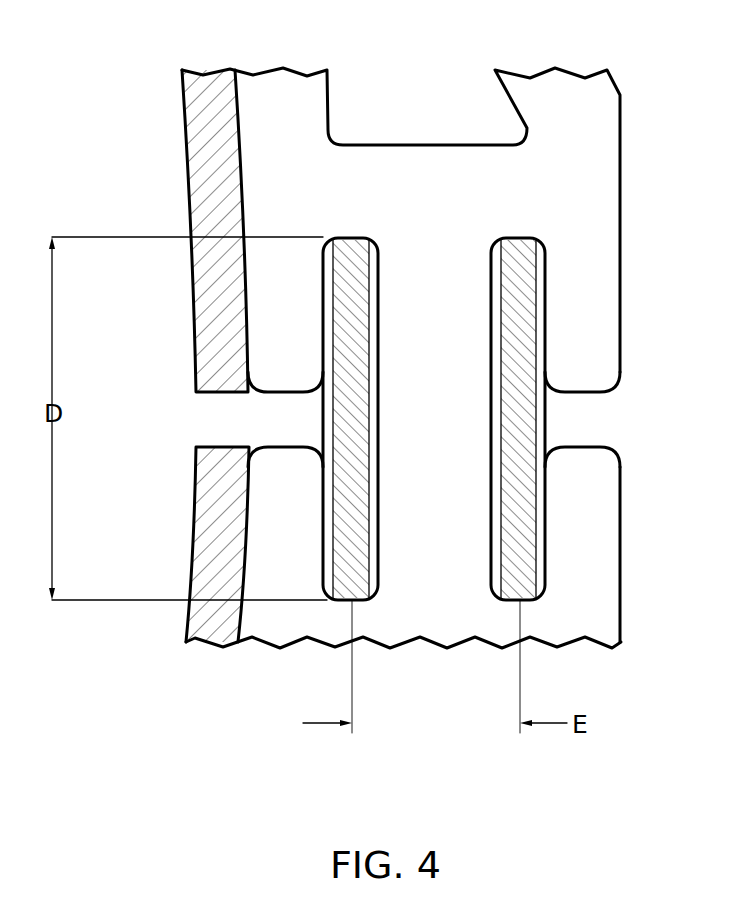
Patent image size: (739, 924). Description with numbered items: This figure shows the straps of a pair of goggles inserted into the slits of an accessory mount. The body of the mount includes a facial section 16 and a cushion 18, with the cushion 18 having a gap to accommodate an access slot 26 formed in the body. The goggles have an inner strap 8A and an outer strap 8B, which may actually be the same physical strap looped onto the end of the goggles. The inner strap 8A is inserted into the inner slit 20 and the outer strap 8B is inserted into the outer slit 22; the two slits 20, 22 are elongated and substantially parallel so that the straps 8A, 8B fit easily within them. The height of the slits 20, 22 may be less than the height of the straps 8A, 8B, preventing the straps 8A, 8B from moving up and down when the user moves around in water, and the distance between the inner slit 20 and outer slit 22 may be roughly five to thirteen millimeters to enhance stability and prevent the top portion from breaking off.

The facial section 16 is at (264, 82).
The cushion 18 is at (187, 152).
The inner strap 8A is at (345, 243).
The outer strap 8B is at (523, 243).
The inner slit 20 is at (377, 256).
The outer slit 22 is at (541, 268).
The access slot 26 is at (183, 388).